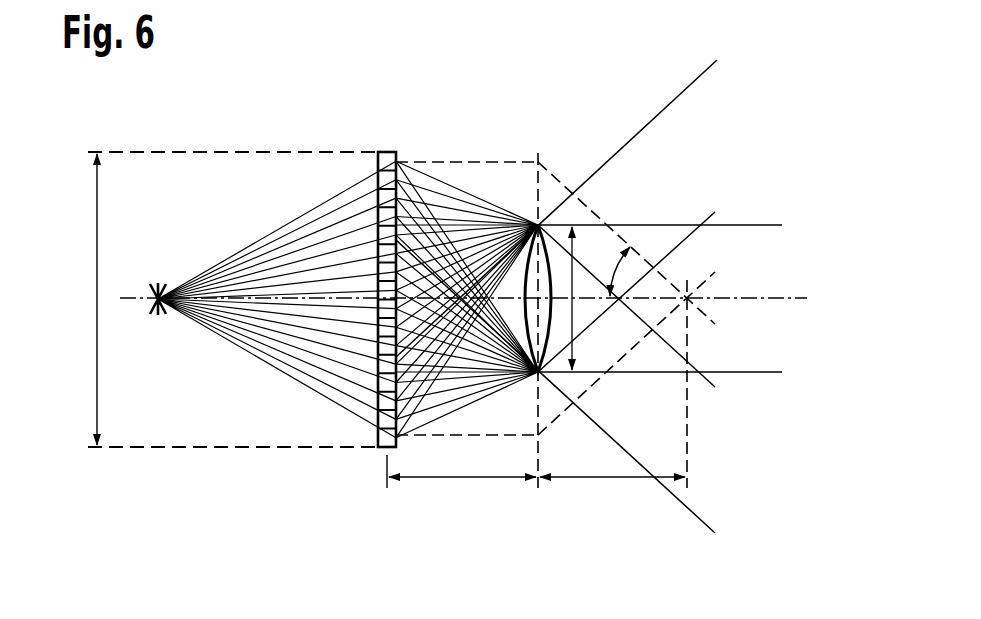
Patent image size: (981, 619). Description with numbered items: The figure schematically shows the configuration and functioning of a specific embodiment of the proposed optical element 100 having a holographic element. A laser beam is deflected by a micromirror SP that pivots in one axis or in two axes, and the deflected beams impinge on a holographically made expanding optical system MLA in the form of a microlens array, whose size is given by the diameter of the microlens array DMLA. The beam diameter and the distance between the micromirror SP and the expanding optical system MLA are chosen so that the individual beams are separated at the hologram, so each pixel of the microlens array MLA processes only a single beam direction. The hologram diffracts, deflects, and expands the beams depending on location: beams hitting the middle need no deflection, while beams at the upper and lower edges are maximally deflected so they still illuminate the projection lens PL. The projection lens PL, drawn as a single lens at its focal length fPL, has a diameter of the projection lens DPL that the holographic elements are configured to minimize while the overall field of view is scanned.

The optical element 100 is at (344, 476).
The micromirror SP is at (162, 282).
The microlens array MLA is at (391, 152).
The projection lens PL is at (545, 242).
The diameter of the microlens array DMLA is at (202, 299).
The diameter of the projection lens DPL is at (573, 281).
The focal length of the projection lens fPL is at (536, 486).